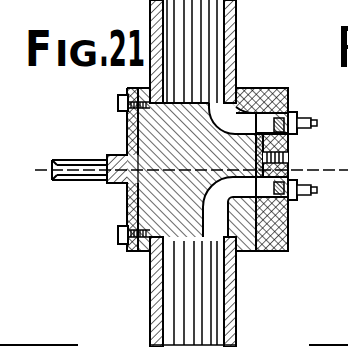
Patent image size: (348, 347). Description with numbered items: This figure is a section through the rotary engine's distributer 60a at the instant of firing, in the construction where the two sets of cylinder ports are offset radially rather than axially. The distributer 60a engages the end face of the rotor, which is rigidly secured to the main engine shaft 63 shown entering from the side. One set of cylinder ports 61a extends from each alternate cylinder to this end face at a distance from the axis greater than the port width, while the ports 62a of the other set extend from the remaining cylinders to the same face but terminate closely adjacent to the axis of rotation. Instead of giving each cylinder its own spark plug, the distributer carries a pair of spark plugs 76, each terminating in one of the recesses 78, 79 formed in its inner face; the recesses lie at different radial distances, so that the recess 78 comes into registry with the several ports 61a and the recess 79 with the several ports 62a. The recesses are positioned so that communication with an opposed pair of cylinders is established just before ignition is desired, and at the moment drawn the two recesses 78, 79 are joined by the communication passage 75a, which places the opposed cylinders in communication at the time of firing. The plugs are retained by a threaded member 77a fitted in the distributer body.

The distributer 60a is at (291, 241).
The port 61a is at (226, 117).
The port 62a is at (218, 217).
The main engine shaft 63 is at (104, 160).
The communication passage 75a is at (289, 144).
The spark plug 76 is at (304, 126).
The knurled ring 77a is at (289, 162).
The recess 78 is at (266, 122).
The recess 79 is at (289, 212).